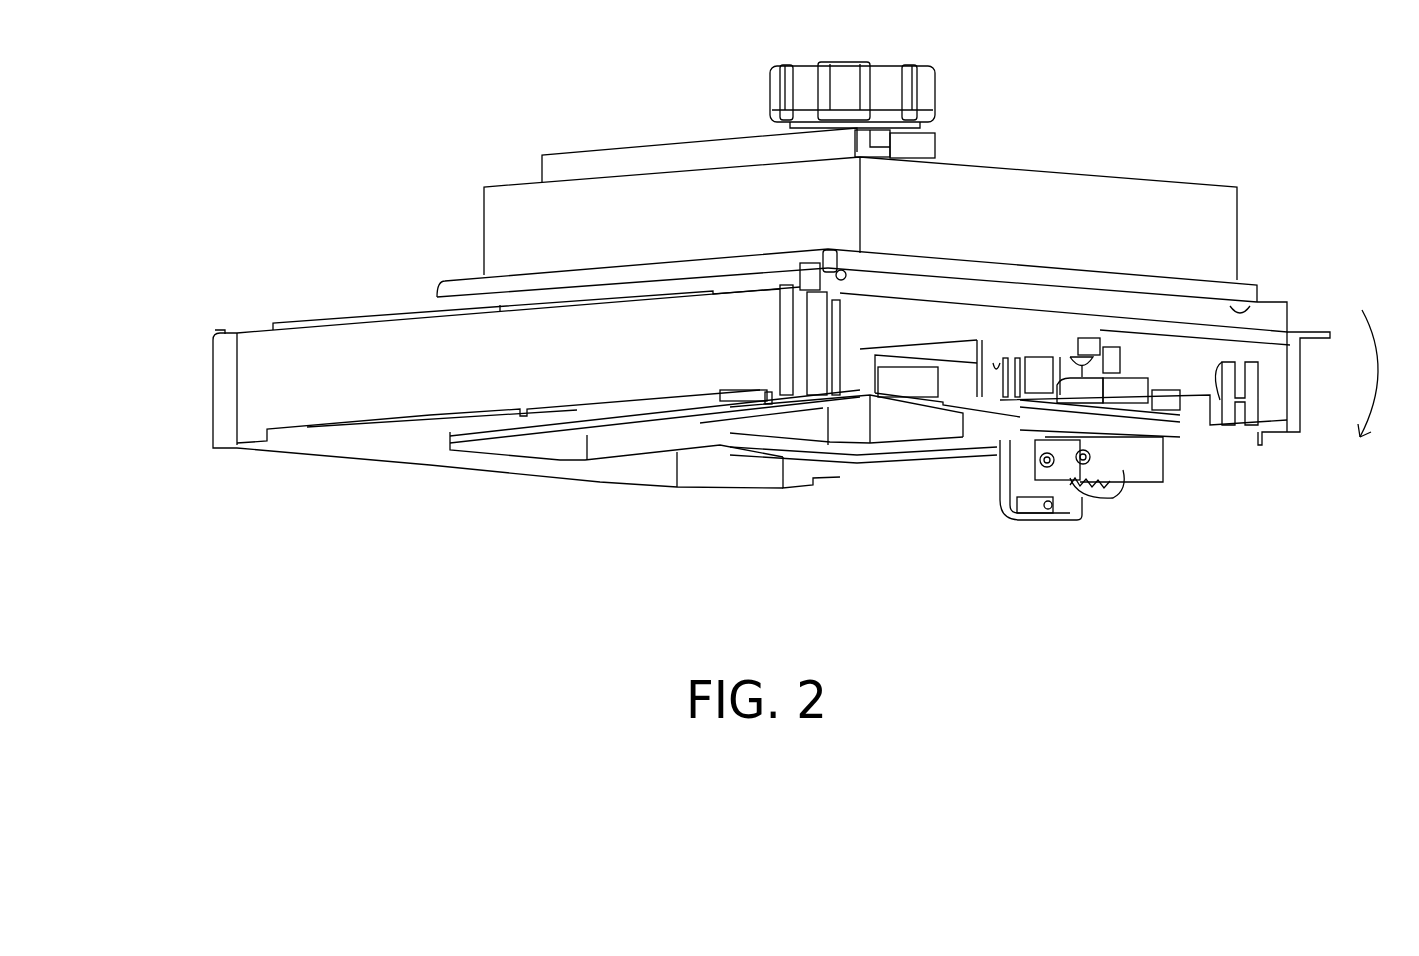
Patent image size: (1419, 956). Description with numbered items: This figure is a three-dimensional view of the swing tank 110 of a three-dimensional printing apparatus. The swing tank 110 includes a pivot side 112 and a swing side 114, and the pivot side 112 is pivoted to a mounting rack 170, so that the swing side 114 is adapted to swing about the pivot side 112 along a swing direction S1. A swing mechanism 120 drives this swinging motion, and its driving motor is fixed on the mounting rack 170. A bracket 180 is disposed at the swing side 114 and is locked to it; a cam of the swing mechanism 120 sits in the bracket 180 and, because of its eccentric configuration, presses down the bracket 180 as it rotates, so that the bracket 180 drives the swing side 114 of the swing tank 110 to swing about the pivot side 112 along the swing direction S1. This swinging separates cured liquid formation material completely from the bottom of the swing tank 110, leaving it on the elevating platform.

The swing tank 110 is at (1268, 233).
The pivot side 112 is at (848, 270).
The swing side 114 is at (1290, 317).
The swing mechanism 120 is at (1150, 460).
The mounting rack 170 is at (272, 389).
The bracket 180 is at (1005, 512).
The swing direction S1 is at (1387, 373).